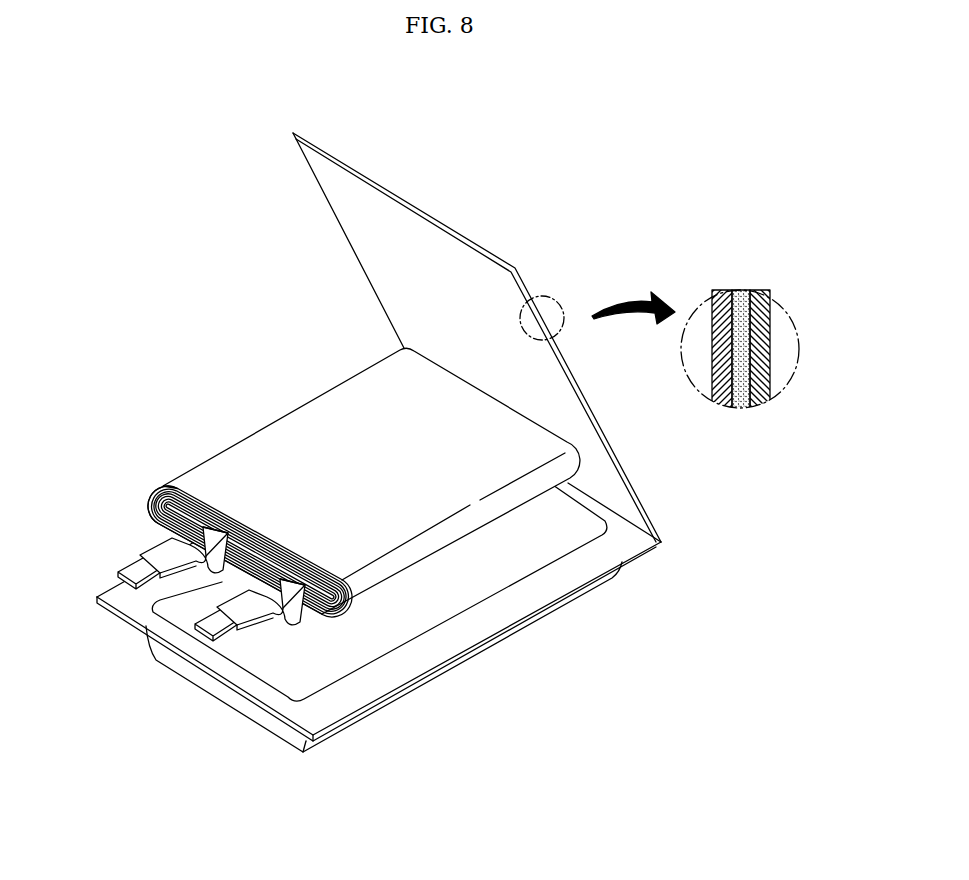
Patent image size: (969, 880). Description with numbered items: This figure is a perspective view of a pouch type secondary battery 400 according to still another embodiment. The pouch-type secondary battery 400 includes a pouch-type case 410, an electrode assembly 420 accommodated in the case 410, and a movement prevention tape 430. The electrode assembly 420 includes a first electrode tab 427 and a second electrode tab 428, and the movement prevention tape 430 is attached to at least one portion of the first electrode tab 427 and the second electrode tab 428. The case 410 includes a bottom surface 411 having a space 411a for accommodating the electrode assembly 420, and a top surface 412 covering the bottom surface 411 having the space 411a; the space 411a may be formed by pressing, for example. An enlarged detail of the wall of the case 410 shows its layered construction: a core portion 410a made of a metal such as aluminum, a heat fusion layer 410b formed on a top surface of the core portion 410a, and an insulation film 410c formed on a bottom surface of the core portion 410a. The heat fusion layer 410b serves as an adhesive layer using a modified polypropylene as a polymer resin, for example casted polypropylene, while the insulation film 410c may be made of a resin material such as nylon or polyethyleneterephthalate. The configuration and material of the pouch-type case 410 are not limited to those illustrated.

The pouch-type secondary battery 400 is at (540, 146).
The pouch-type case 410 is at (360, 228).
The core portion 410a is at (740, 292).
The heat fusion layer 410b is at (760, 295).
The insulation film 410c is at (723, 297).
The bottom surface 411 is at (615, 550).
The space 411a is at (398, 620).
The top surface 412 is at (622, 510).
The electrode assembly 420 is at (257, 411).
The first electrode tab 427 is at (207, 627).
The second electrode tab 428 is at (120, 568).
The movement prevention tape 430 is at (162, 542).